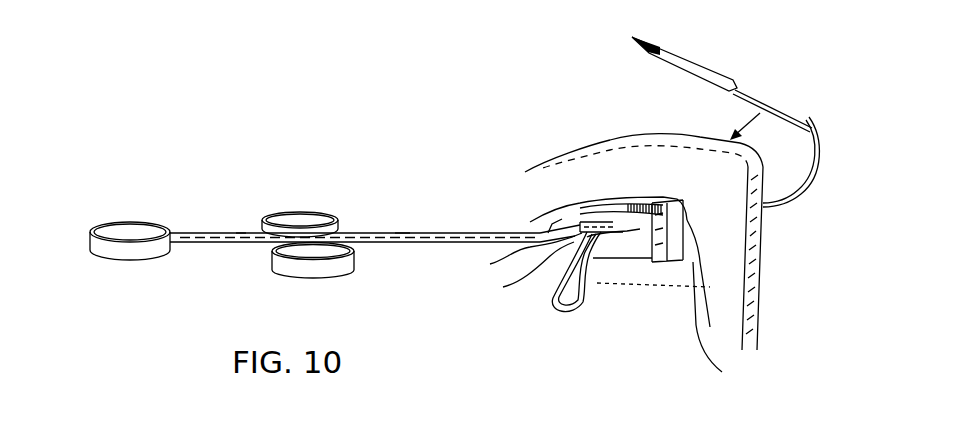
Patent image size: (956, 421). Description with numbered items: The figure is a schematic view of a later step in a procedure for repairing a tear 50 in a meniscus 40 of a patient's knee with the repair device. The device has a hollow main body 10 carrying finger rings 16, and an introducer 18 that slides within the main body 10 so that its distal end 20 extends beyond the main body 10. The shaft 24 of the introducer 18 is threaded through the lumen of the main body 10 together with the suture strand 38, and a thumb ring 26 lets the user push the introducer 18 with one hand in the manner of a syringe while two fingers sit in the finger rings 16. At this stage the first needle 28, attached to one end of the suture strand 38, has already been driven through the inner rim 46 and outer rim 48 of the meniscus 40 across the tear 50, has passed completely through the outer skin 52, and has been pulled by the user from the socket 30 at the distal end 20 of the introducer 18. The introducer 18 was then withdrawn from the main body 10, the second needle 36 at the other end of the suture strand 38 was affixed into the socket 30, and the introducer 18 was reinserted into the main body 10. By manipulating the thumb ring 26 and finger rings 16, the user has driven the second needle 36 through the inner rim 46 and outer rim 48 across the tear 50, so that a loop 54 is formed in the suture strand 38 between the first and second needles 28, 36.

The main body 10 is at (403, 230).
The finger rings 16 is at (320, 212).
The introducer 18 is at (240, 219).
The distal end of the introducer 20 is at (537, 230).
The shaft of the introducer 24 is at (207, 243).
The thumb ring 26 is at (127, 222).
The first needle 28 is at (717, 67).
The socket 30 is at (560, 232).
The second needle 36 is at (575, 217).
The suture strand 38 is at (503, 287).
The meniscus 40 is at (490, 264).
The inner rim of the meniscus 46 is at (637, 266).
The outer rim of the meniscus 48 is at (720, 365).
The tear 50 is at (640, 210).
The outer skin 52 is at (760, 247).
The loop 54 is at (567, 317).